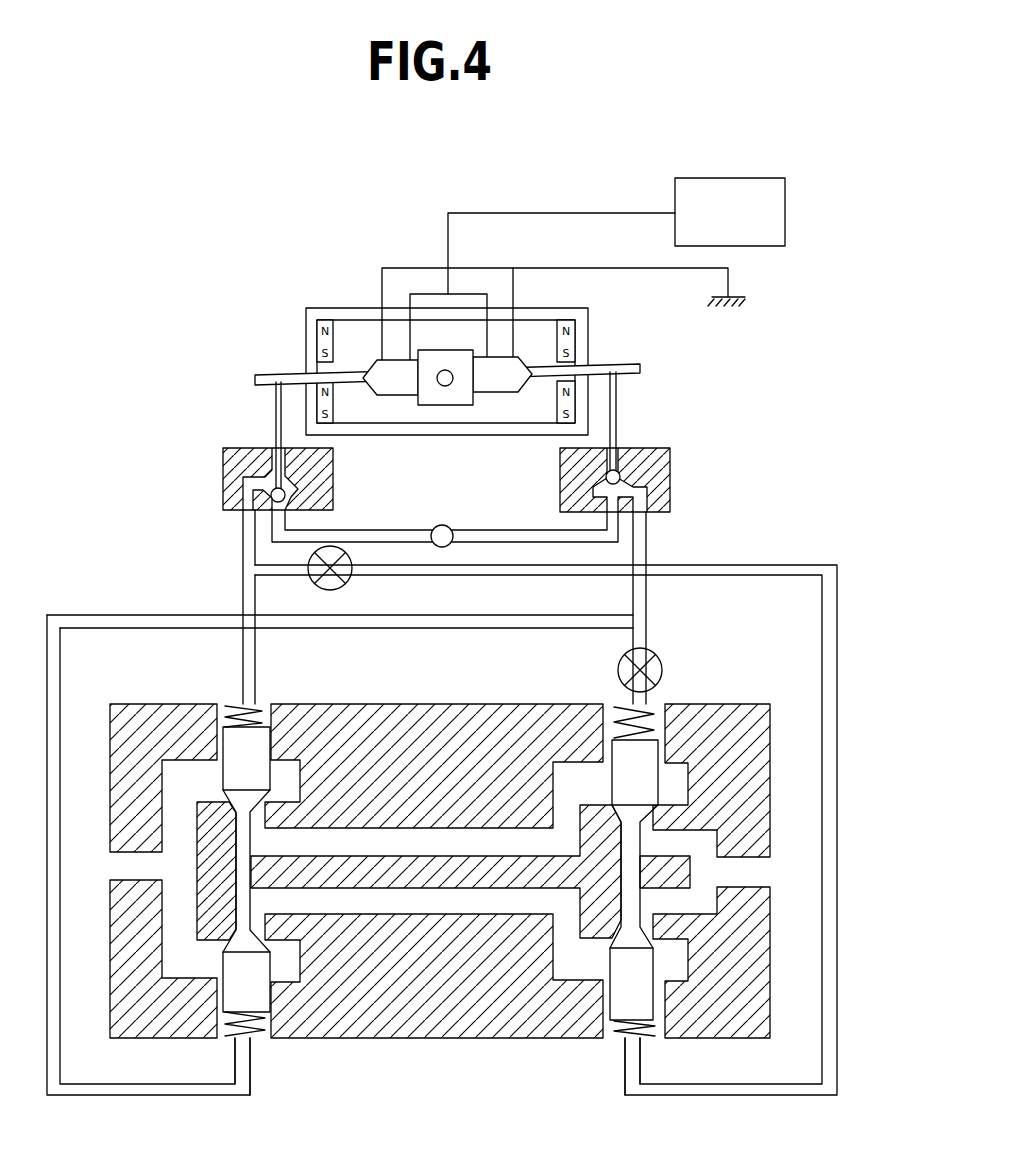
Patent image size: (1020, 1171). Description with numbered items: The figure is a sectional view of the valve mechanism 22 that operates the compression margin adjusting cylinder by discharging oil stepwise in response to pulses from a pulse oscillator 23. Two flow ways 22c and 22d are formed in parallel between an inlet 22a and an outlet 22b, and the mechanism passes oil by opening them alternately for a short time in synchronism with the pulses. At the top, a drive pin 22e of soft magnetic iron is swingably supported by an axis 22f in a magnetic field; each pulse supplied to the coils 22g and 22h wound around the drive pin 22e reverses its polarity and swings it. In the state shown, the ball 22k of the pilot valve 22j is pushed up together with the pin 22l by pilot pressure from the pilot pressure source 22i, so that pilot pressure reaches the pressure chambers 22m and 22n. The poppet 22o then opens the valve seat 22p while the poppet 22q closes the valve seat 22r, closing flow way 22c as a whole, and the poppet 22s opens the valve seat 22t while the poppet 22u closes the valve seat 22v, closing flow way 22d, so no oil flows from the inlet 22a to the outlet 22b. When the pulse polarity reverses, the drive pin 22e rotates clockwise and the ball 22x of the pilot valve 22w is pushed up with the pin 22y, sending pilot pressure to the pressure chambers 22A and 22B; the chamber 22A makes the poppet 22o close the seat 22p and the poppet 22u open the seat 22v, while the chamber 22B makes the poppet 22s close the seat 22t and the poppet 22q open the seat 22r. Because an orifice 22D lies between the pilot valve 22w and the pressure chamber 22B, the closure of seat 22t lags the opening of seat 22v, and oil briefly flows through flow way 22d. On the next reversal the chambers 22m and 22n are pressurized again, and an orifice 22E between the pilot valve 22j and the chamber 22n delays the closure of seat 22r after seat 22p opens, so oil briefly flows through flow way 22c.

The valve mechanism 22 is at (537, 1060).
The inlet 22a is at (110, 856).
The outlet 22b is at (772, 876).
The flow way 22c is at (410, 830).
The flow way 22d is at (408, 908).
The drive pin 22e is at (640, 368).
The axis 22f is at (452, 384).
The coil 22g is at (378, 372).
The coil 22h is at (515, 372).
The pilot pressure source 22i is at (443, 524).
The pilot valve 22j is at (671, 492).
The ball 22k is at (606, 480).
The pin 22l is at (617, 425).
The pressure chamber 22m is at (225, 1040).
The pressure chamber 22n is at (606, 706).
The poppet 22o is at (260, 735).
The valve seat 22p is at (225, 790).
The poppet 22q is at (652, 707).
The valve seat 22r is at (619, 808).
The poppet 22s is at (615, 1040).
The valve seat 22t is at (616, 940).
The poppet 22u is at (270, 1038).
The valve seat 22v is at (224, 945).
The pilot valve 22w is at (222, 478).
The ball 22x is at (286, 496).
The pin 22y is at (276, 420).
The pressure chamber 22A is at (222, 708).
The pressure chamber 22B is at (655, 1038).
The orifice 22D is at (336, 590).
The orifice 22E is at (651, 653).
The pulse oscillator 23 is at (787, 214).